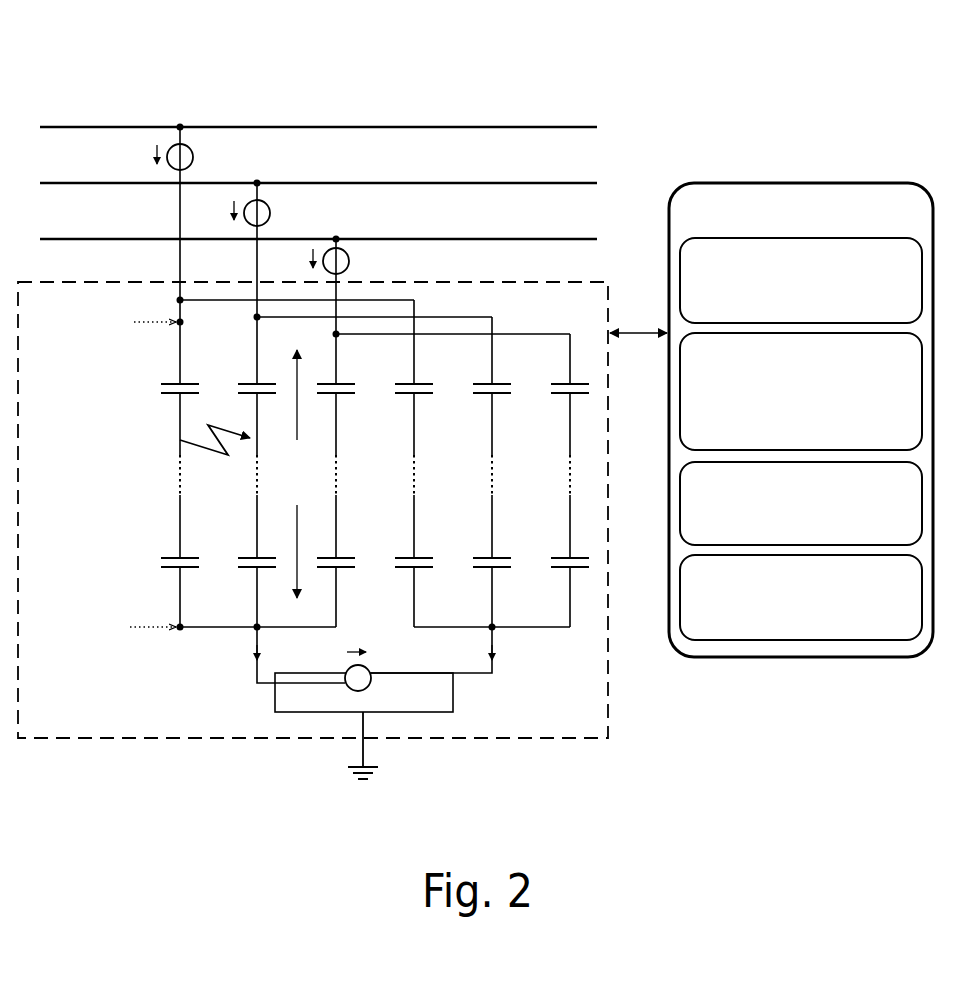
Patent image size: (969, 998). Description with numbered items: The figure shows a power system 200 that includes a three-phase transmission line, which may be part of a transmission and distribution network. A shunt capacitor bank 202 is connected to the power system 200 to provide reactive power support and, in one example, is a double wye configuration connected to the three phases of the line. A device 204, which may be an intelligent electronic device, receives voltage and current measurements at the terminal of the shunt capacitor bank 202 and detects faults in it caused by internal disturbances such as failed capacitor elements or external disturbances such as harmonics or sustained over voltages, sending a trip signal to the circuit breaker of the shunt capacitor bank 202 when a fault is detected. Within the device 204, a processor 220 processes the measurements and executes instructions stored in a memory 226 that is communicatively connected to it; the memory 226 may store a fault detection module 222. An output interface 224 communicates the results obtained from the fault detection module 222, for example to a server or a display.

The power system 200 is at (571, 70).
The shunt capacitor bank 202 is at (556, 275).
The device 204 is at (826, 234).
The processor 220 is at (821, 311).
The fault detection module 222 is at (821, 438).
The output interface 224 is at (821, 534).
The memory 226 is at (821, 628).